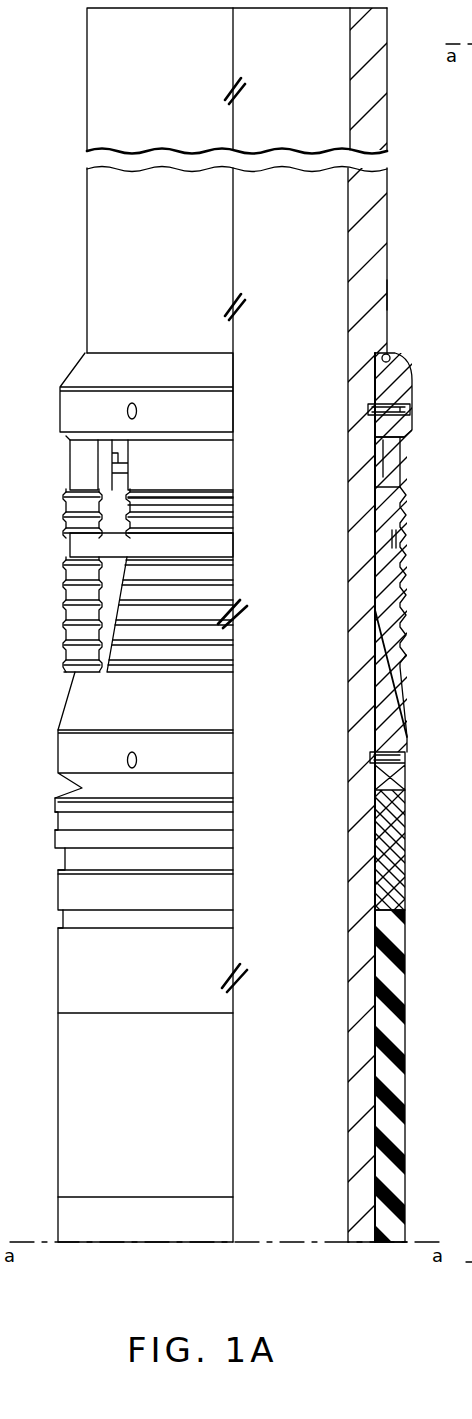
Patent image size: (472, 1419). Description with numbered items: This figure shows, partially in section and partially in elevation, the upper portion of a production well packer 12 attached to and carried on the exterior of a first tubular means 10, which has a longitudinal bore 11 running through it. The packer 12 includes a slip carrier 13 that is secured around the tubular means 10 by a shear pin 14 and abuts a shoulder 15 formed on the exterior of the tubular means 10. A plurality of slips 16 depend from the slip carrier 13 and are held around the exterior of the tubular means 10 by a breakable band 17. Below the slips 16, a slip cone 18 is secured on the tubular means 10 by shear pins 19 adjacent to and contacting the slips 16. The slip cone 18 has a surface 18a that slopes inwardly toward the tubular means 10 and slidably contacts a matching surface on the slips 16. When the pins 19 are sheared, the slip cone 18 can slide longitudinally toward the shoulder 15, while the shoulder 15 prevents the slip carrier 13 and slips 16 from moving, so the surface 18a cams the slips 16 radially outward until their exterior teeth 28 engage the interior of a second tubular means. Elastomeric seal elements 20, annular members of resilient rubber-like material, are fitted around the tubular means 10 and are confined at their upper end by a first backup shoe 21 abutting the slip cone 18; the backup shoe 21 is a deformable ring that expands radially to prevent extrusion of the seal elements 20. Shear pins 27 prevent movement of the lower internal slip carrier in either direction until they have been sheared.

The first tubular means 10 is at (373, 276).
The longitudinal bore 11 is at (298, 774).
The production well packer 12 is at (431, 407).
The slip carrier 13 is at (394, 386).
The shear pin 14 is at (410, 424).
The shoulder 15 is at (390, 356).
The slips 16 is at (106, 609).
The breakable band 17 is at (80, 543).
The slip cone 18 is at (400, 708).
The surface 18a is at (68, 692).
The shear pins 19 is at (390, 717).
The elastomeric seal elements 20 is at (395, 950).
The first backup shoe 21 is at (396, 885).
The shear pins 27 is at (471, 292).
The teeth 28 is at (405, 615).